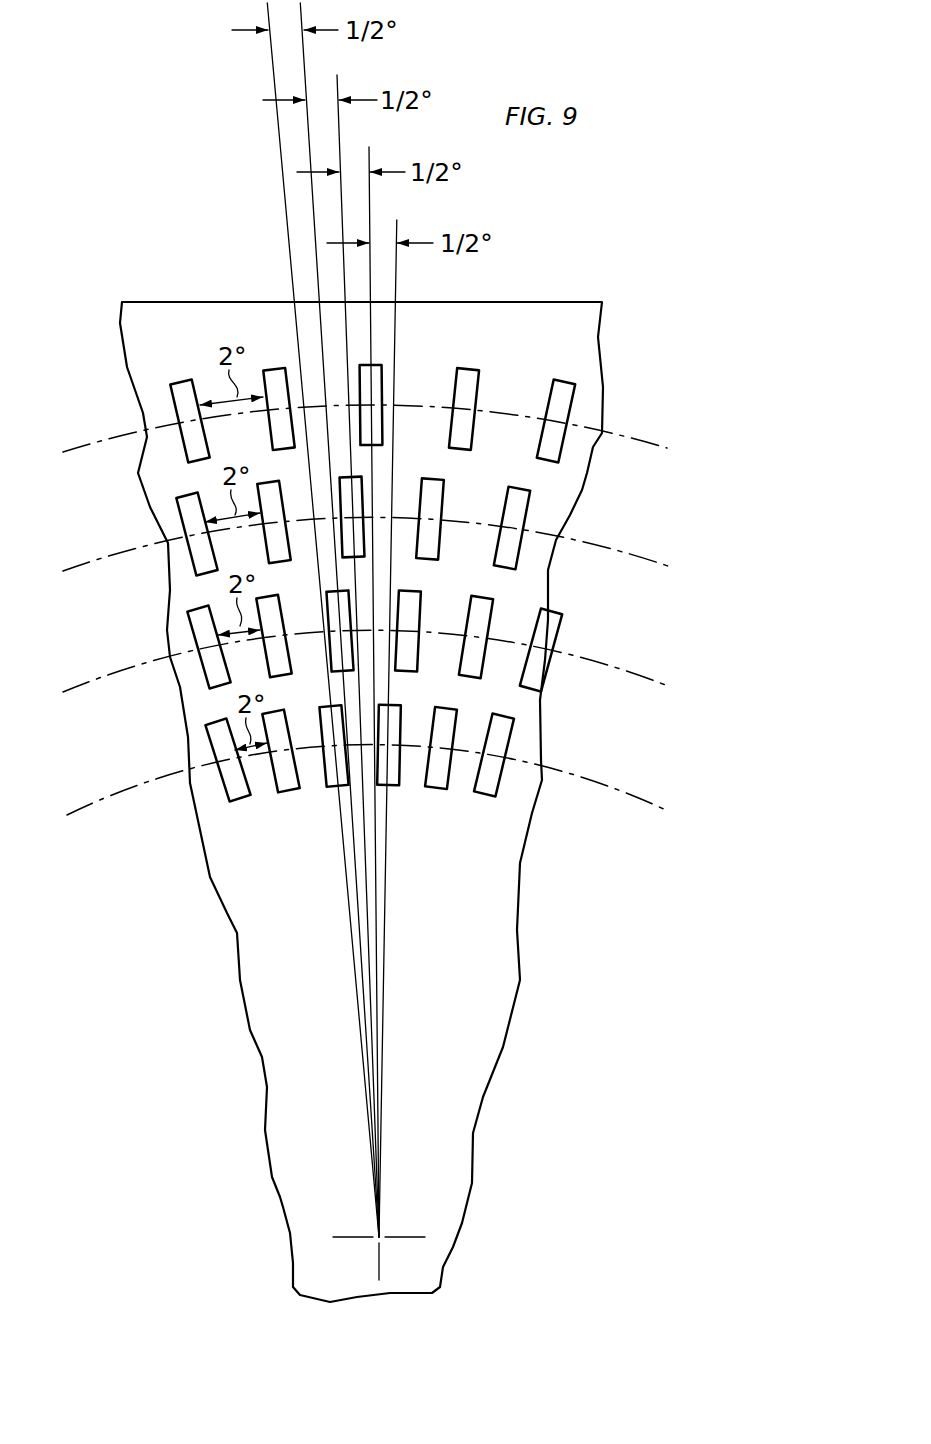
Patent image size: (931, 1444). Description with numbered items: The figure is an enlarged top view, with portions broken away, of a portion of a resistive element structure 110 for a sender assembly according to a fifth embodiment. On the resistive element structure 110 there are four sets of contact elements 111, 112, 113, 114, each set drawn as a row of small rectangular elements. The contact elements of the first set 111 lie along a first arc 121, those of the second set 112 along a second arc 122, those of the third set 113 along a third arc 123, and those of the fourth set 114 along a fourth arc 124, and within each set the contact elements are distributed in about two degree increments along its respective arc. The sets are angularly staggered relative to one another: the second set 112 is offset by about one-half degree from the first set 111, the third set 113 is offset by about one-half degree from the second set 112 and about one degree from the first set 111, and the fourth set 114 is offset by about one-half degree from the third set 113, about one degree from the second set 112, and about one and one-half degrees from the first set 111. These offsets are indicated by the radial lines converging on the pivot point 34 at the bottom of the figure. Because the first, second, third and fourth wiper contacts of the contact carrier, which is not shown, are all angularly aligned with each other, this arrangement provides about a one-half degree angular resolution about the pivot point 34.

The resistive element structure 110 is at (565, 296).
The pivot point 34 is at (376, 1241).
The first set of contact elements 111 is at (288, 793).
The second set of contact elements 112 is at (192, 633).
The third set of contact elements 113 is at (182, 514).
The fourth set of contact elements 114 is at (181, 382).
The first arc 121 is at (85, 803).
The second arc 122 is at (78, 680).
The third arc 123 is at (77, 563).
The fourth arc 124 is at (73, 450).